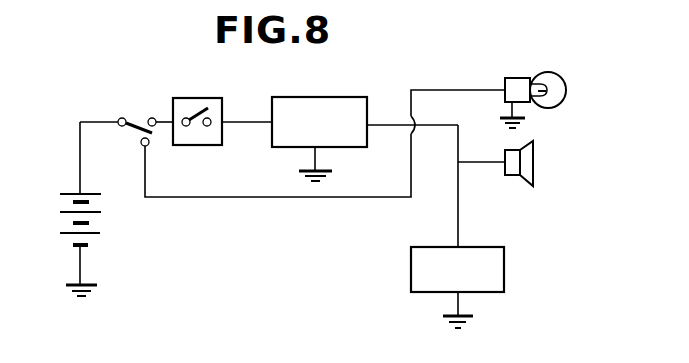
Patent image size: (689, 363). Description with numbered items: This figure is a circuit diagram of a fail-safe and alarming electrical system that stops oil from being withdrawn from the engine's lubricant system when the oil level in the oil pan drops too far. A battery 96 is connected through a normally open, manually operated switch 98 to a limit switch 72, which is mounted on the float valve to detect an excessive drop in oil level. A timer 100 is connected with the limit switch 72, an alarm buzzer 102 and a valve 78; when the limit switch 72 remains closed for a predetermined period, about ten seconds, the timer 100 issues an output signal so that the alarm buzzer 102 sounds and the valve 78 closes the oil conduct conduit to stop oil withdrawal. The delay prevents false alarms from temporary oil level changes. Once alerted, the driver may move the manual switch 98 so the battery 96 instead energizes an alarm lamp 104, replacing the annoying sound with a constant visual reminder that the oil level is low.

The limit switch 72 is at (199, 98).
The valve 78 is at (505, 268).
The battery 96 is at (63, 224).
The manually operated switch 98 is at (142, 117).
The timer 100 is at (314, 97).
The alarm buzzer 102 is at (538, 161).
The alarm lamp 104 is at (562, 73).